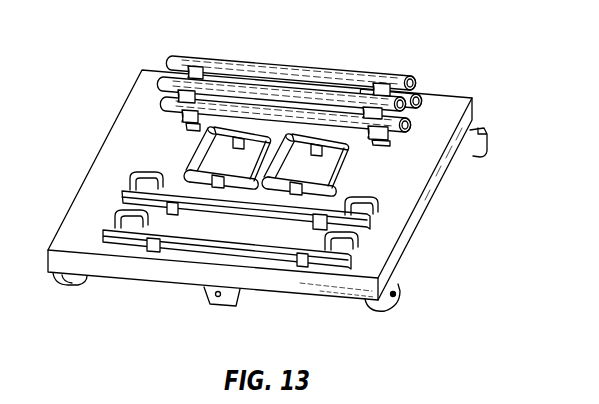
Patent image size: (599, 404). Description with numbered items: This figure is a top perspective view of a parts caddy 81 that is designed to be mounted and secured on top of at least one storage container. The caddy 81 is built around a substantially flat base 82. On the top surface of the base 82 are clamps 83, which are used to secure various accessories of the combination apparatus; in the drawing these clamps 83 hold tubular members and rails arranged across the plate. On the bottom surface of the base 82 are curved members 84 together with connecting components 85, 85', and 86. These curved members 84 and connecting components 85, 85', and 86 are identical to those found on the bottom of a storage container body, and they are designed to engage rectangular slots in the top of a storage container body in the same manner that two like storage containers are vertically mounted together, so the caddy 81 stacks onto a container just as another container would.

The parts caddy 81 is at (292, 188).
The base 82 is at (435, 198).
The clamps 83 is at (193, 68).
The curved members 84 is at (482, 145).
The connecting component 85 is at (61, 307).
The connecting component 85' is at (418, 305).
The connecting component 86 is at (210, 298).